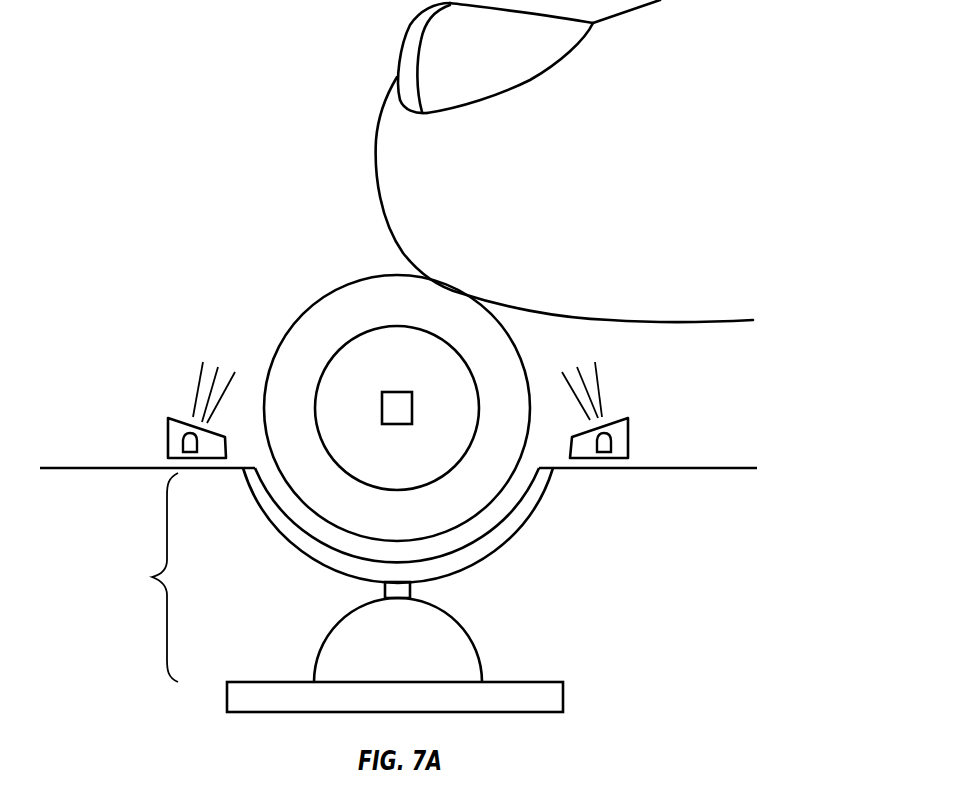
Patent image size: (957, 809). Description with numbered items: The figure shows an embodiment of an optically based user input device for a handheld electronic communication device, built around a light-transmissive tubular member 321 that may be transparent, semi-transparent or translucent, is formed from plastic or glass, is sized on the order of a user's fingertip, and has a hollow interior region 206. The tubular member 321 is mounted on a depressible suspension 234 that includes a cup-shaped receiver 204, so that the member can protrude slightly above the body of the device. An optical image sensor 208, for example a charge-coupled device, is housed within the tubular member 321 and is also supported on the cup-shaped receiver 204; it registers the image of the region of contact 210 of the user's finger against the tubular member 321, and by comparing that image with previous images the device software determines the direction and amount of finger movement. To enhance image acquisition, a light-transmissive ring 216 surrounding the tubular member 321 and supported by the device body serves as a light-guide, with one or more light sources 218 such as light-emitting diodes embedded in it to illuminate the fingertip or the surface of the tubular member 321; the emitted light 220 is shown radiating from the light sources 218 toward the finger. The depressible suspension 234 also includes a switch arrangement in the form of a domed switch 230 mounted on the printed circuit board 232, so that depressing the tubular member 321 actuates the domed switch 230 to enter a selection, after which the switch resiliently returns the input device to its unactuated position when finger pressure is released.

The light-transmissive tubular member 321 is at (148, 227).
The region of contact 210 is at (388, 258).
The hollow interior region 206 is at (363, 487).
The optical image sensor 208 is at (395, 408).
The cup-shaped receiver 204 is at (518, 528).
The domed switch 230 is at (312, 632).
The printed circuit board 232 is at (213, 695).
The depressible suspension 234 is at (152, 577).
The light source 218 is at (180, 442).
The light-transmissive ring 216 is at (168, 427).
The emitted light 220 is at (172, 396).